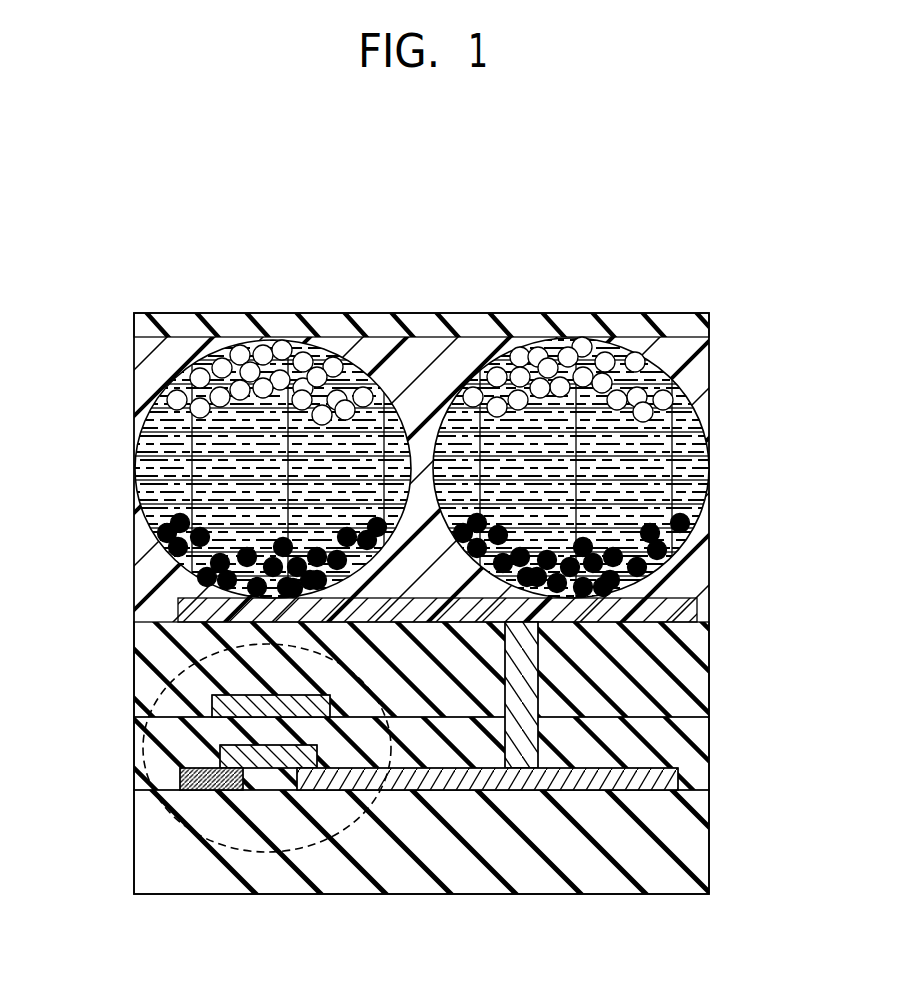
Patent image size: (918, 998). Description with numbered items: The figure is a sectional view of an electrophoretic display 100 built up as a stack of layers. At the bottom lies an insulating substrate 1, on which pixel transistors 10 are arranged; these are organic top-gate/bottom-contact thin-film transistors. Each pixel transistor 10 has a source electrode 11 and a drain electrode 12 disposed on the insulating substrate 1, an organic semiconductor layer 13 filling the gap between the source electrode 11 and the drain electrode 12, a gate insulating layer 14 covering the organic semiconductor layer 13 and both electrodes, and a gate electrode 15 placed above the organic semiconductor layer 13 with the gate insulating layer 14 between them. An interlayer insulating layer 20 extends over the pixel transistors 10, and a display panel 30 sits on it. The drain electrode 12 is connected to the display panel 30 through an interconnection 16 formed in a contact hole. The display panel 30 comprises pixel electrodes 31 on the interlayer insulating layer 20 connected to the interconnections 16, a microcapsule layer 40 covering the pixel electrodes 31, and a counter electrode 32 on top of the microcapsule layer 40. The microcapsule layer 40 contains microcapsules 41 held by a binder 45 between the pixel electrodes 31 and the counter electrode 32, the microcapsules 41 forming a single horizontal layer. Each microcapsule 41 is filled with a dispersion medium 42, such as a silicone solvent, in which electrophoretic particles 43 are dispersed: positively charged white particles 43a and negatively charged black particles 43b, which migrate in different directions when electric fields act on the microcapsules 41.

The electrophoretic display 100 is at (133, 272).
The insulating substrate 1 is at (702, 845).
The pixel transistor 10 is at (163, 683).
The source electrode 11 is at (178, 770).
The drain electrode 12 is at (404, 780).
The organic semiconductor layer 13 is at (222, 746).
The gate insulating layer 14 is at (702, 750).
The gate electrode 15 is at (240, 695).
The interconnection 16 is at (537, 672).
The interlayer insulating layer 20 is at (702, 692).
The display panel 30 is at (459, 412).
The pixel electrode 31 is at (479, 610).
The counter electrode 32 is at (708, 322).
The microcapsule layer 40 is at (459, 411).
The microcapsule 41 is at (155, 530).
The dispersion medium 42 is at (140, 466).
The electrophoretic particles 43 is at (424, 397).
The white particles 43a is at (237, 357).
The black particles 43b is at (279, 540).
The binder 45 is at (155, 366).